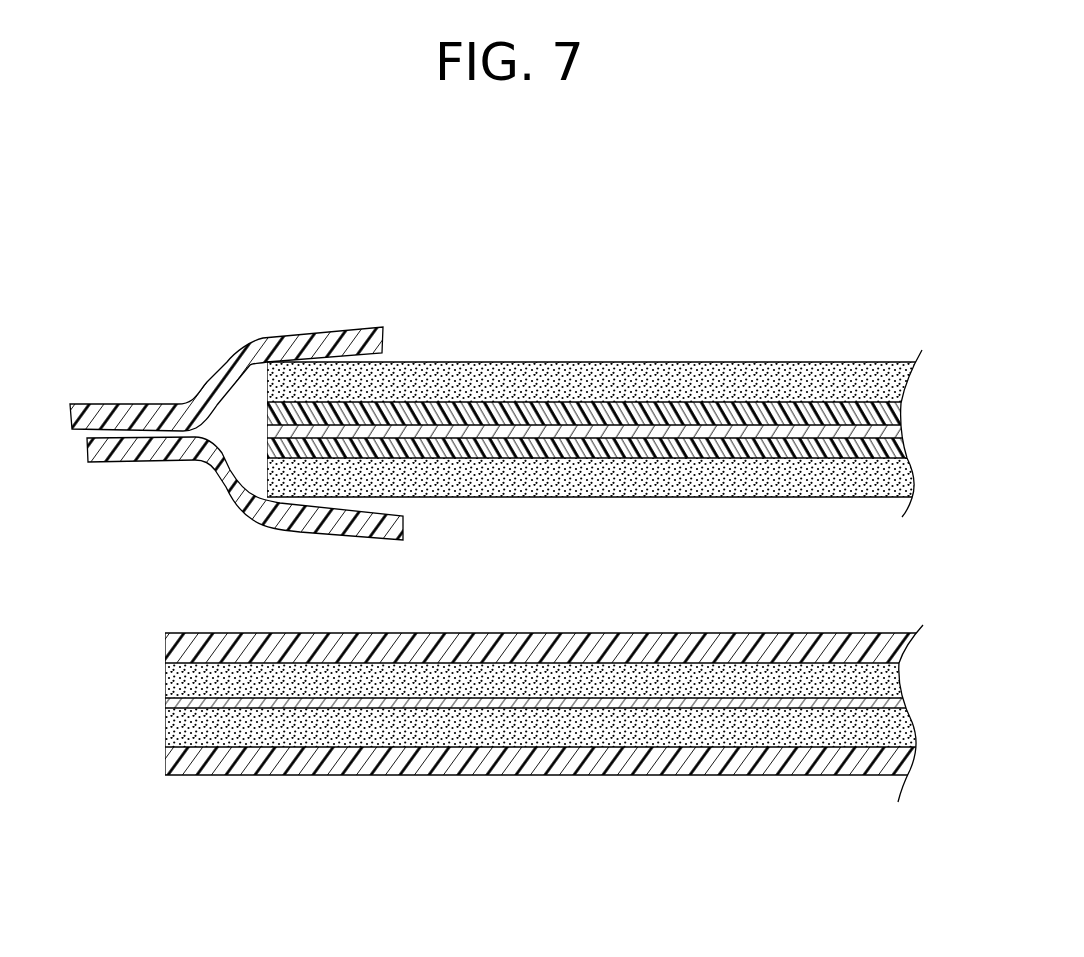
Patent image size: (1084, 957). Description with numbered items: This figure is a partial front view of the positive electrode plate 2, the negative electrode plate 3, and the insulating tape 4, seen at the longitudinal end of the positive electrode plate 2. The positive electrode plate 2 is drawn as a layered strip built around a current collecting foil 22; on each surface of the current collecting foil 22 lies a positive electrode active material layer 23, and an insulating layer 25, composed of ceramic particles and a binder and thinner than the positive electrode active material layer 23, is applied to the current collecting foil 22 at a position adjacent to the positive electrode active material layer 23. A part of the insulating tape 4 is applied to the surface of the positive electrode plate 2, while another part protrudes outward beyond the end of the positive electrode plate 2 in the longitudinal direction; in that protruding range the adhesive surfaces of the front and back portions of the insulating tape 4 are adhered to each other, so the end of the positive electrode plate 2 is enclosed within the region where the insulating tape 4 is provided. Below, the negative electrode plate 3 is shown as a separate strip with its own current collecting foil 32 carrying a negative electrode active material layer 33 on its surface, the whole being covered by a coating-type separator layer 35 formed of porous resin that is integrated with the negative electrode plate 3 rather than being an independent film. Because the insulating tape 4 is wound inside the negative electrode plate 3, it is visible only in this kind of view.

The positive electrode plate 2 is at (602, 374).
The negative electrode plate 3 is at (550, 763).
The insulating tape 4 is at (185, 438).
The current collecting foil 22 is at (760, 430).
The positive electrode active material layer 23 is at (498, 478).
The insulating layer 25 is at (665, 462).
The current collecting foil 32 is at (433, 705).
The negative electrode active material layer 33 is at (618, 690).
The separator layer 35 is at (297, 643).